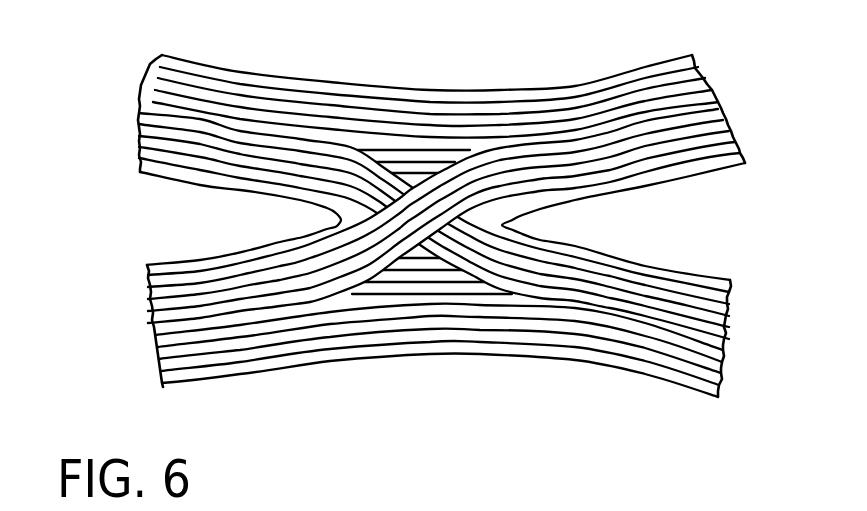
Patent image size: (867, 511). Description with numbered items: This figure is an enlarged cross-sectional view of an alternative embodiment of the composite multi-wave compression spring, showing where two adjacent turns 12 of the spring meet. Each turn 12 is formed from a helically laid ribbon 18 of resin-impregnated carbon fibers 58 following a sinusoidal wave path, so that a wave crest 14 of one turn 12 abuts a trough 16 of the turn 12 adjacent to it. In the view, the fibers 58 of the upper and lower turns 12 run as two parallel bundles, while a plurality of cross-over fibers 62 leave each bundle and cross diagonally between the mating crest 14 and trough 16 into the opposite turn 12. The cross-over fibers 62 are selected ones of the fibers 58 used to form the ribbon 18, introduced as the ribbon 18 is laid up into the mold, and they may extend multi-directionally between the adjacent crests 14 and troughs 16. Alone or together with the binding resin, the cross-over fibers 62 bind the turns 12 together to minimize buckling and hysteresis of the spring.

The turn 12 is at (177, 265).
The wave crest 14 is at (692, 368).
The trough 16 is at (657, 94).
The ribbon 18 is at (711, 209).
The fibers 58 is at (422, 140).
The cross-over fibers 62 is at (326, 155).